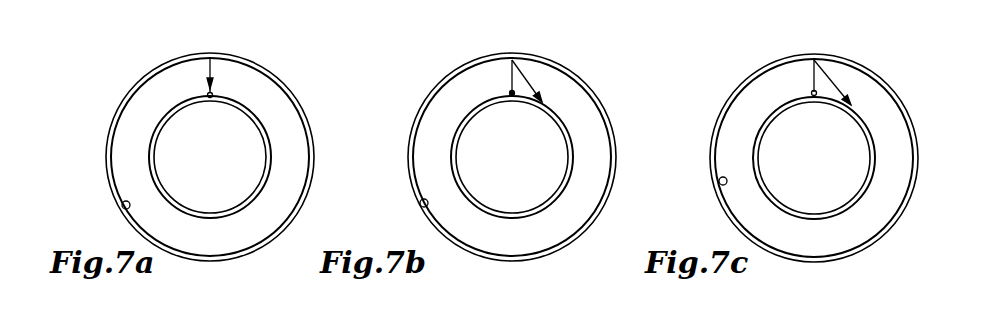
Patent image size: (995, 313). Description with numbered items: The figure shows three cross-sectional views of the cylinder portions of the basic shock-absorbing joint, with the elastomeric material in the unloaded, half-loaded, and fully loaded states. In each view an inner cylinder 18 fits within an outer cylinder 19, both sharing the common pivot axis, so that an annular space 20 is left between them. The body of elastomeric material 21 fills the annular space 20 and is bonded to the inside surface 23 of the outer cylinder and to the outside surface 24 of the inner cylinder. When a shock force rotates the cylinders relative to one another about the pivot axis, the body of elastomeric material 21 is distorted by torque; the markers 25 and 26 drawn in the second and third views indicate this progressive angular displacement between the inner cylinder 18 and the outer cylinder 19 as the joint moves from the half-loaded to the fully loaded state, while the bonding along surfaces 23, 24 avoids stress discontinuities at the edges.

In FIG. 7A, the inner cylinder 18 is at (168, 194).
In FIG. 7B, the inner cylinder 18 is at (468, 190).
In FIG. 7C, the inner cylinder 18 is at (773, 195).
In FIG. 7A, the outer cylinder 19 is at (273, 75).
In FIG. 7B, the outer cylinder 19 is at (573, 72).
In FIG. 7C, the outer cylinder 19 is at (857, 62).
In FIG. 7A, the annular space 20 is at (294, 133).
In FIG. 7B, the annular space 20 is at (620, 140).
In FIG. 7C, the annular space 20 is at (893, 175).
In FIG. 7A, the body of elastomeric material 21 is at (217, 249).
In FIG. 7B, the body of elastomeric material 21 is at (521, 248).
In FIG. 7C, the body of elastomeric material 21 is at (824, 249).
In FIG. 7A, the inside surface of the outer cylinder 23 is at (122, 208).
In FIG. 7B, the inside surface of the outer cylinder 23 is at (420, 203).
In FIG. 7C, the inside surface of the outer cylinder 23 is at (719, 184).
In FIG. 7A, the outside surface of the inner cylinder 24 is at (160, 118).
In FIG. 7B, the outside surface of the inner cylinder 24 is at (465, 115).
In FIG. 7C, the outside surface of the inner cylinder 24 is at (768, 115).
In FIG. 7B, the radial and inclined direction arrows 25 is at (522, 72).
In FIG. 7C, the inclined direction arrow 26 is at (832, 72).